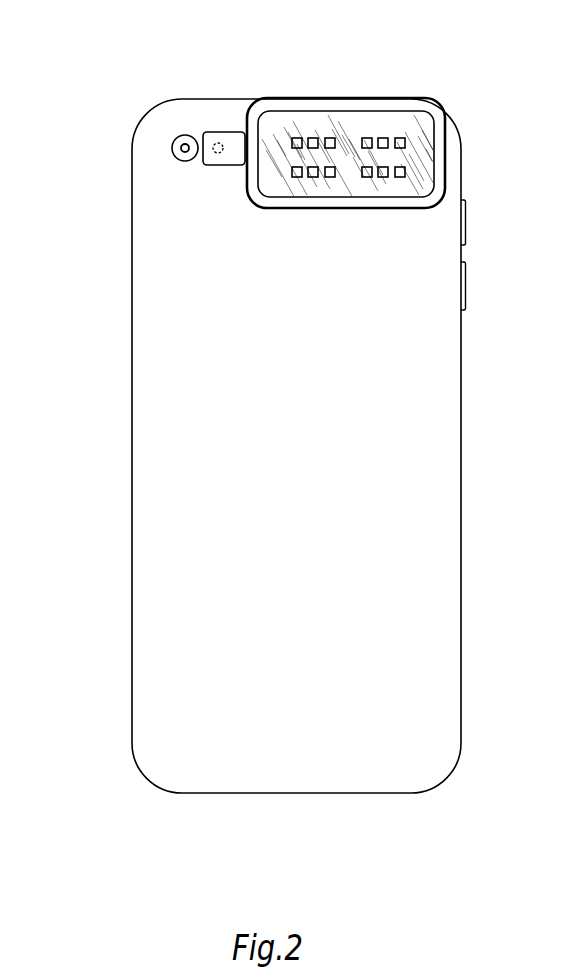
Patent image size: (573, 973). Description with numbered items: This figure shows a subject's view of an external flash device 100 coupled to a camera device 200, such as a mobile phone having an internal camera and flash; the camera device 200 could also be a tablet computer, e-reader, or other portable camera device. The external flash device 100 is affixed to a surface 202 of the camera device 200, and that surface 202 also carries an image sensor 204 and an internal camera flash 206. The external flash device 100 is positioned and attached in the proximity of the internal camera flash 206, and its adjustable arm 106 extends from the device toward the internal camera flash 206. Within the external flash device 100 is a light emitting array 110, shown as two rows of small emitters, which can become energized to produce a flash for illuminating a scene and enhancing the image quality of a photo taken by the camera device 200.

The external flash device 100 is at (395, 103).
The adjustable arm 106 is at (227, 132).
The light emitting array 110 is at (328, 178).
The camera device 200 is at (143, 419).
The surface 202 is at (278, 471).
The image sensor 204 is at (173, 145).
The internal camera flash 206 is at (219, 153).